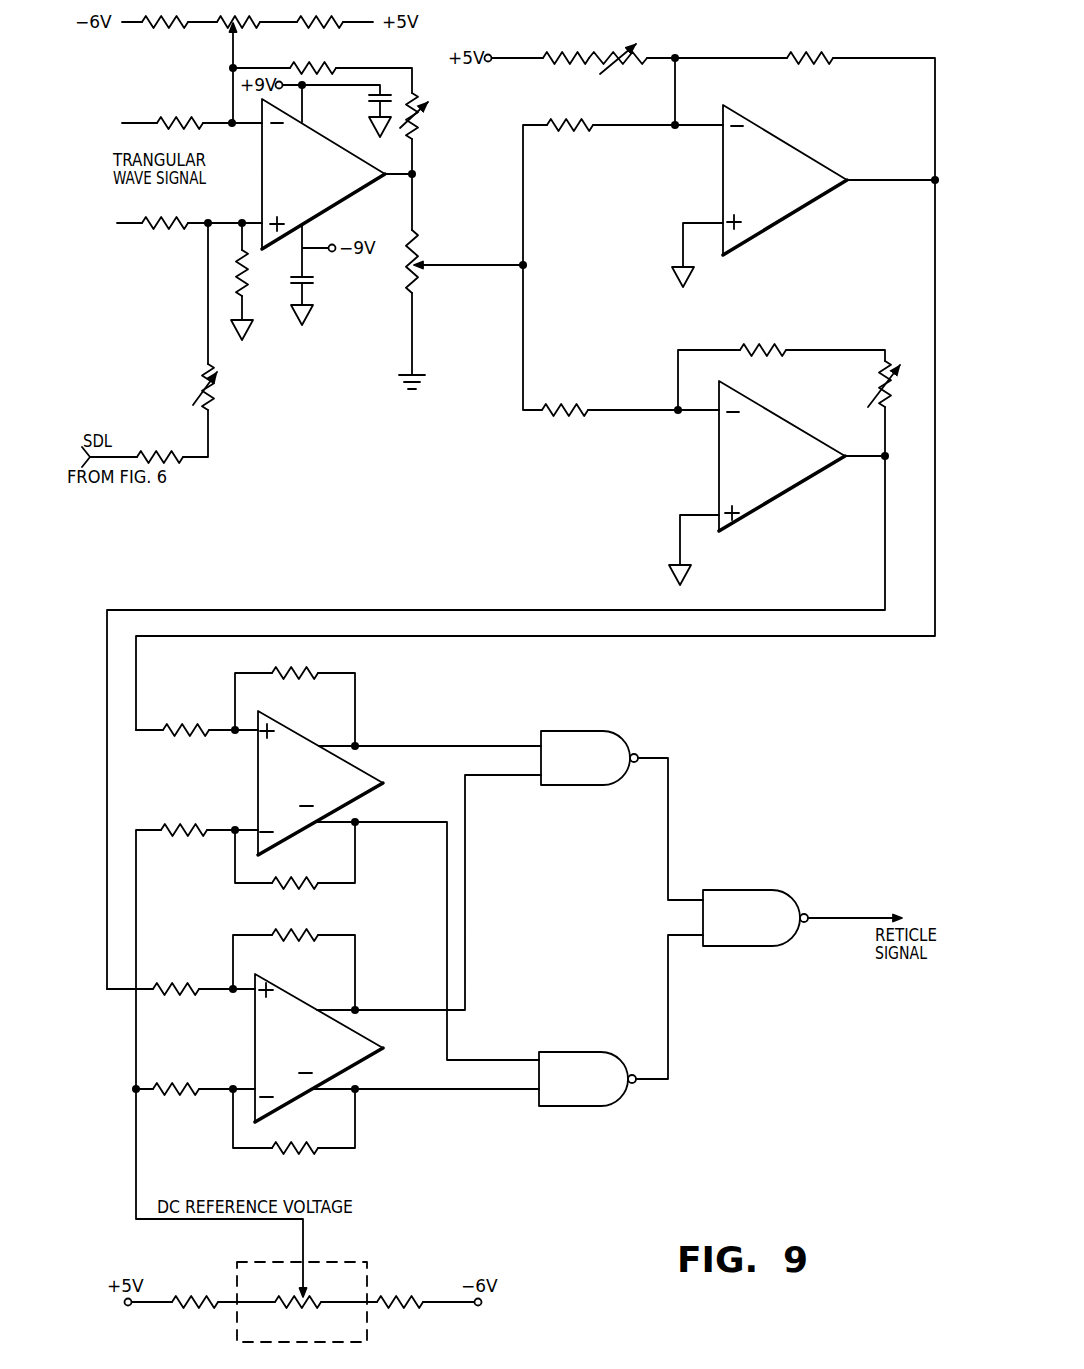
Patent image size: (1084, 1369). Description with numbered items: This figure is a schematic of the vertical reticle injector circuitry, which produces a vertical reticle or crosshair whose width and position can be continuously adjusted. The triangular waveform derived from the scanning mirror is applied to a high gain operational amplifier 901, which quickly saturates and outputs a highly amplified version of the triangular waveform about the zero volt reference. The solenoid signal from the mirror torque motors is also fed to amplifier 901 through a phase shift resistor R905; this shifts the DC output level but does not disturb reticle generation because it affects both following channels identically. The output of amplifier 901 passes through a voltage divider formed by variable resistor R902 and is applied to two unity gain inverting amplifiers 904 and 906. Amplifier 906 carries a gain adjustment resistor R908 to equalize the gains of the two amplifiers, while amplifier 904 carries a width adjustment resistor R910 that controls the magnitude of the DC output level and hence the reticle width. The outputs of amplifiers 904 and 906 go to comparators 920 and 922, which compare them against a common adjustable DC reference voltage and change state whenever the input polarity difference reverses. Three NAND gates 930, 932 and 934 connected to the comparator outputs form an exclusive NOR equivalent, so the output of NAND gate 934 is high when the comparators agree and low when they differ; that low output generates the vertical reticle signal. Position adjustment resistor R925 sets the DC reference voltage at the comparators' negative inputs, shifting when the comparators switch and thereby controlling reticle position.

The operational amplifier 901 is at (322, 137).
The variable resistor R902 is at (416, 248).
The phase shift resistor R905 is at (210, 398).
The width adjustment resistor R910 is at (620, 66).
The unity gain inverting amplifier 904 is at (802, 153).
The unity gain inverting amplifier 906 is at (781, 418).
The gain adjustment resistor R908 is at (880, 372).
The comparator 920 is at (353, 766).
The comparator 922 is at (360, 1035).
The NAND gate 930 is at (573, 731).
The NAND gate 932 is at (580, 1052).
The NAND gate 934 is at (726, 889).
The position adjustment resistor R925 is at (300, 1307).